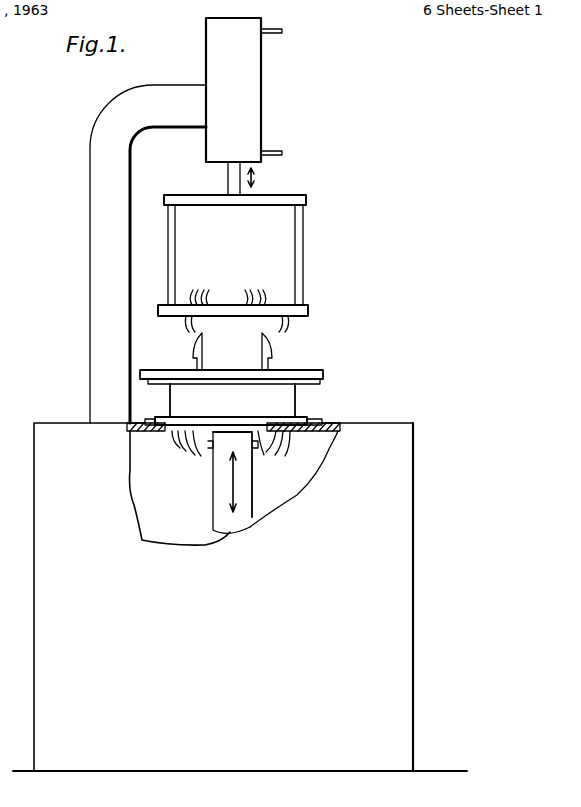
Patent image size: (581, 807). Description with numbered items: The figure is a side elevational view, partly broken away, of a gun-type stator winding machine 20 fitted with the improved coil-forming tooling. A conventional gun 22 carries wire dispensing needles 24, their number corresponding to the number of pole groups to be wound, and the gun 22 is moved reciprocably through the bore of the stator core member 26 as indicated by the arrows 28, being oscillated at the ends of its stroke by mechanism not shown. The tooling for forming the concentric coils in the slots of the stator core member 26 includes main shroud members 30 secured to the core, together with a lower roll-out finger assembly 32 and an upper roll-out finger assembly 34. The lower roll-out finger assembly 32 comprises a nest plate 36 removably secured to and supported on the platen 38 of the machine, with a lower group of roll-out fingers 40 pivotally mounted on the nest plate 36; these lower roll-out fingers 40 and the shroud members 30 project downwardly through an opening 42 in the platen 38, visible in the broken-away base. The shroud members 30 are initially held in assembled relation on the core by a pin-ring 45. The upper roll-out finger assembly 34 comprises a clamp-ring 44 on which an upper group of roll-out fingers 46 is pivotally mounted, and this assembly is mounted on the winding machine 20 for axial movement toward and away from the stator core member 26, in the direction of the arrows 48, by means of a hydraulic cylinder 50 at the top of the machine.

The gun-type stator winding machine 20 is at (433, 441).
The gun 22 is at (213, 470).
The wire dispensing needles 24 is at (264, 456).
The stator core member 26 is at (305, 398).
The arrows 28 is at (232, 488).
The main shroud members 30 is at (276, 351).
The lower roll-out finger assembly 32 is at (317, 412).
The upper roll-out finger assembly 34 is at (310, 311).
The nest plate 36 is at (166, 416).
The platen 38 is at (322, 431).
The lower roll-out fingers 40 is at (168, 435).
The opening 42 is at (296, 431).
The clamp-ring 44 is at (309, 305).
The pin-ring 45 is at (330, 373).
The upper roll-out fingers 46 is at (212, 296).
The arrows 48 is at (256, 181).
The hydraulic cylinder 50 is at (262, 79).